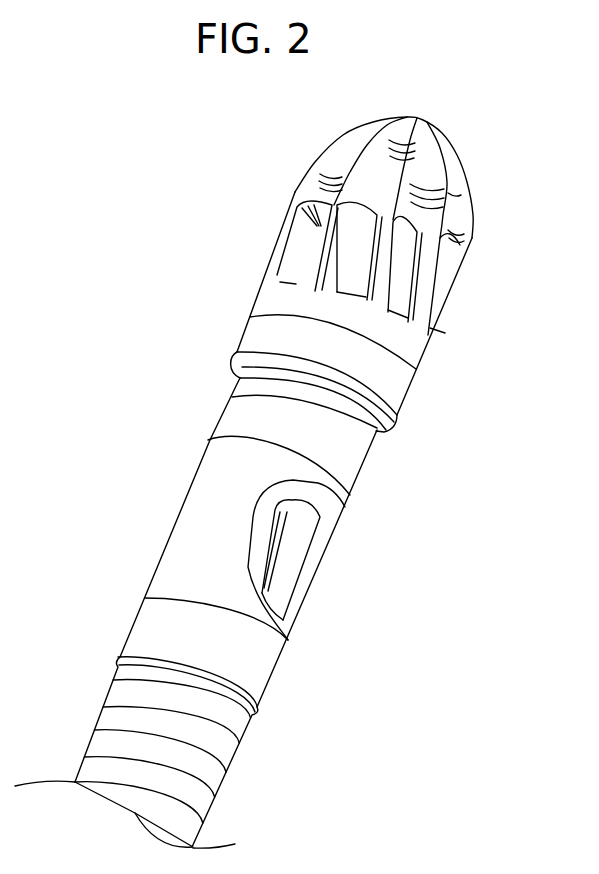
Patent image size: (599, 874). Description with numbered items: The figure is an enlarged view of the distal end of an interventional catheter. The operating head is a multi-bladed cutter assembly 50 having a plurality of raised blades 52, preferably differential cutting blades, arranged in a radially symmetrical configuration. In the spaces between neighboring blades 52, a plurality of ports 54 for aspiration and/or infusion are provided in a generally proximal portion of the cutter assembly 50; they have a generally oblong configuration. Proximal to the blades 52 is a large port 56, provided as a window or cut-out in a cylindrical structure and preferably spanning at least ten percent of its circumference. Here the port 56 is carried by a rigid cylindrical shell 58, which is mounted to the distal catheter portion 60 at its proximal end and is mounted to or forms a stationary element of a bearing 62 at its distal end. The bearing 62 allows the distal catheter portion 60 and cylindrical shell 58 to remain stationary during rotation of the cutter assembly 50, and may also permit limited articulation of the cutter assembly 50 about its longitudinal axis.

The multi-bladed cutter assembly 50 is at (263, 176).
The raised blades 52 is at (350, 148).
The ports 54 is at (310, 262).
The large port 56 is at (300, 542).
The rigid cylindrical shell 58 is at (176, 578).
The distal catheter portion 60 is at (108, 727).
The bearing 62 is at (399, 444).